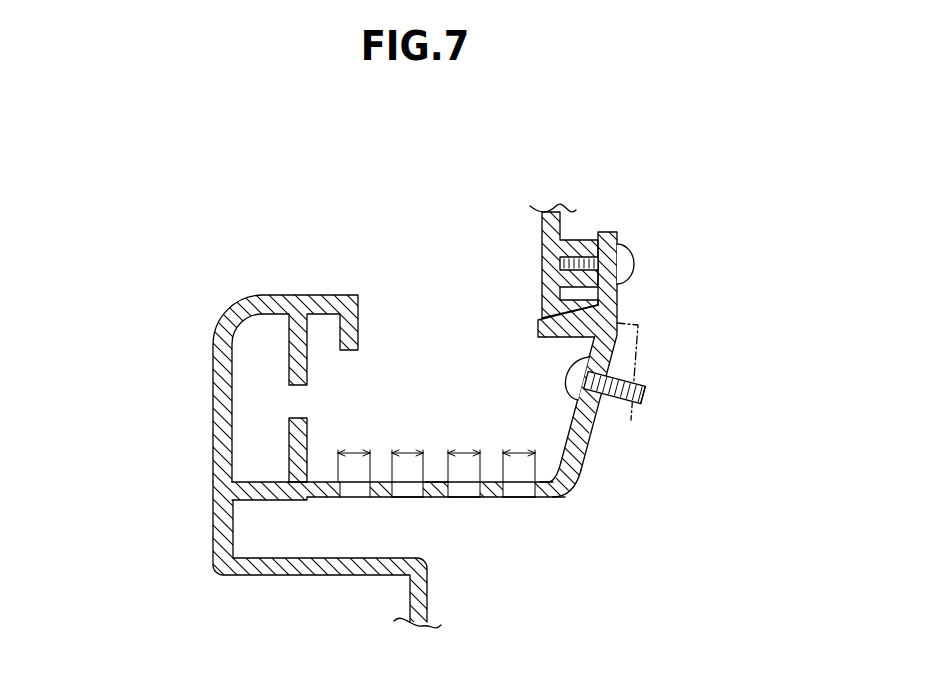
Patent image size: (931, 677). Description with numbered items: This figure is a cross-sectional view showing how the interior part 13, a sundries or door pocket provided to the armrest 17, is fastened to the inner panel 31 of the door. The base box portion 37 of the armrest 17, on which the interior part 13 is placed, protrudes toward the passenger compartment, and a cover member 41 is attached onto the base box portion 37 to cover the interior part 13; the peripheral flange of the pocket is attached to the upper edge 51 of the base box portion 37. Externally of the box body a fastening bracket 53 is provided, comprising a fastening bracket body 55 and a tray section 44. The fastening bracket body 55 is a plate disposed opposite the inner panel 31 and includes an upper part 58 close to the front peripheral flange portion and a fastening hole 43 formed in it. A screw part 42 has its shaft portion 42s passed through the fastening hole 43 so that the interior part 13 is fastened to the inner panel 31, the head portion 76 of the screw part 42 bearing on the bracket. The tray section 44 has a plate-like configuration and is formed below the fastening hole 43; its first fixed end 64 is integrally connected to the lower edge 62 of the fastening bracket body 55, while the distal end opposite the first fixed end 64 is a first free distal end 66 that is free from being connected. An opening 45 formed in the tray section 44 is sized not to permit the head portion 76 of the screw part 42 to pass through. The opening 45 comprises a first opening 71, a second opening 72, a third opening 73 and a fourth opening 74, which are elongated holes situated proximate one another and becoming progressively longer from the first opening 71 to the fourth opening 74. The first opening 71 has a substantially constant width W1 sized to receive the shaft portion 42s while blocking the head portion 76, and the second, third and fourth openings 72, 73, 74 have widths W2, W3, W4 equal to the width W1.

The interior part 13 is at (427, 375).
The armrest 17 is at (106, 616).
The inner panel 31 is at (651, 273).
The base box portion 37 is at (277, 555).
The cover member 41 is at (285, 346).
The screw part 42 is at (669, 392).
The shaft portion 42s is at (717, 423).
The fastening hole 43 is at (671, 371).
The tray section 44 is at (436, 427).
The opening 45 is at (530, 618).
The upper edge 51 is at (209, 435).
The fastening bracket 53 is at (479, 485).
The fastening bracket body 55 is at (633, 351).
The upper part 58 is at (533, 318).
The lower edge 62 is at (616, 476).
The first fixed end 64 is at (538, 427).
The first free distal end 66 is at (312, 561).
The first opening 71 is at (577, 546).
The second opening 72 is at (531, 546).
The third opening 73 is at (484, 546).
The fourth opening 74 is at (437, 546).
The head portion 76 is at (529, 370).
The width of first opening W1 is at (517, 449).
The width of second opening W2 is at (462, 449).
The width of third opening W3 is at (407, 449).
The width of fourth opening W4 is at (354, 449).